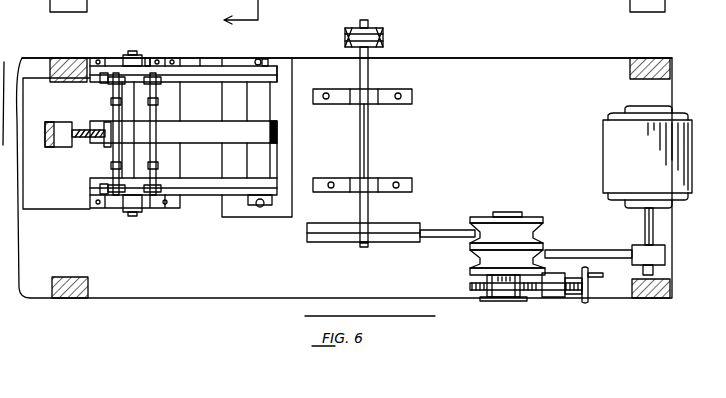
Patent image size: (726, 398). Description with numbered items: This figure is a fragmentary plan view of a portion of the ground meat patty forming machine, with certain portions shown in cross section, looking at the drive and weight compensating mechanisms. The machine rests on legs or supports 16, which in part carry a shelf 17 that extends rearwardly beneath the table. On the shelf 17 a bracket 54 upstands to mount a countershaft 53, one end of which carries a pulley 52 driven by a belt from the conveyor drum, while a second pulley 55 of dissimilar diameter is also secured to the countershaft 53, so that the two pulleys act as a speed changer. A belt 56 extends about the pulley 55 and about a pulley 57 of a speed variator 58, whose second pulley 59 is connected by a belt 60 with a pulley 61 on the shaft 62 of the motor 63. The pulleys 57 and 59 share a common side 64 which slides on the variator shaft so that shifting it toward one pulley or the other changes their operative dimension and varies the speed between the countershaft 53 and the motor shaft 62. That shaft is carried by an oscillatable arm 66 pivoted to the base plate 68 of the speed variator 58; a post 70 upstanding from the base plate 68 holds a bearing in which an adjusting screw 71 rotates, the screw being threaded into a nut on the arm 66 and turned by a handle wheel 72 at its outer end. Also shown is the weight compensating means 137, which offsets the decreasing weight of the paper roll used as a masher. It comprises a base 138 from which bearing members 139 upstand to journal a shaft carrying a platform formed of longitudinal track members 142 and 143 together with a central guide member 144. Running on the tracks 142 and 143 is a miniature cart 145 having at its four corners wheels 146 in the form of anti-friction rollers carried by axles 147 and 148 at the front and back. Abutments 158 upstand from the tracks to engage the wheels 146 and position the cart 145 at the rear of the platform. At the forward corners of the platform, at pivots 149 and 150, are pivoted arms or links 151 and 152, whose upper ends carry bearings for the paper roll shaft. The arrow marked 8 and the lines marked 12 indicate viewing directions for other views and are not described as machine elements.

The section arrow 8 is at (247, 13).
The carriage rods 12 is at (134, 101).
The legs or supports 16 is at (87, 8).
The shelf 17 is at (142, 288).
The pulley 52 is at (378, 28).
The countershaft 53 is at (368, 160).
The bracket 54 is at (412, 96).
The second pulley 55 is at (402, 242).
The belt 56 is at (445, 228).
The pulley 57 is at (520, 222).
The speed variator 58 is at (600, 226).
The second pulley 59 is at (473, 268).
The belt 60 is at (588, 256).
The pulley 61 is at (661, 253).
The motor shaft 62 is at (653, 226).
The motor 63 is at (612, 152).
The common side 64 is at (474, 238).
The oscillatable arm 66 is at (492, 296).
The base plate 68 is at (532, 297).
The post 70 is at (556, 291).
The adjusting screw 71 is at (578, 298).
The handle wheel 72 is at (588, 300).
The weight compensating means 137 is at (150, 256).
The base 138 is at (40, 200).
The bearing members 139 is at (165, 62).
The longitudinal track member 142 is at (228, 70).
The longitudinal track member 143 is at (206, 200).
The central guide member 144 is at (210, 141).
The miniature cart 145 is at (142, 133).
The wheels 146 is at (148, 62).
The axle 147 is at (158, 112).
The axle 148 is at (112, 118).
The pivot 149 is at (268, 207).
The pivot 150 is at (268, 62).
The arm or link 151 is at (252, 206).
The arm or link 152 is at (262, 60).
The abutments 158 is at (84, 82).